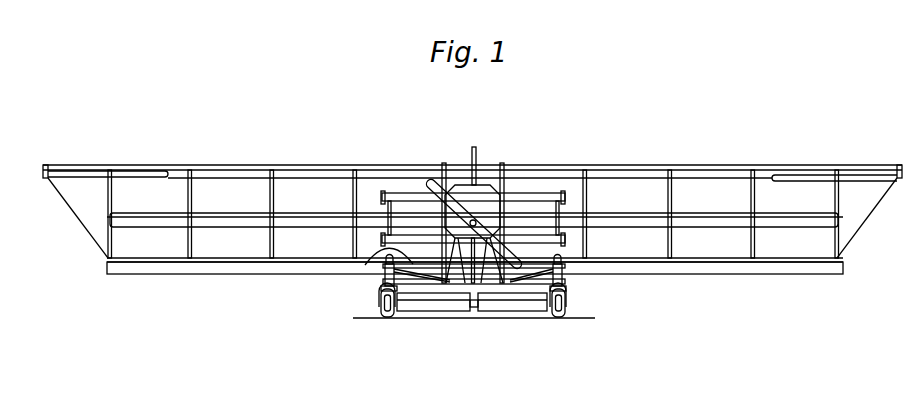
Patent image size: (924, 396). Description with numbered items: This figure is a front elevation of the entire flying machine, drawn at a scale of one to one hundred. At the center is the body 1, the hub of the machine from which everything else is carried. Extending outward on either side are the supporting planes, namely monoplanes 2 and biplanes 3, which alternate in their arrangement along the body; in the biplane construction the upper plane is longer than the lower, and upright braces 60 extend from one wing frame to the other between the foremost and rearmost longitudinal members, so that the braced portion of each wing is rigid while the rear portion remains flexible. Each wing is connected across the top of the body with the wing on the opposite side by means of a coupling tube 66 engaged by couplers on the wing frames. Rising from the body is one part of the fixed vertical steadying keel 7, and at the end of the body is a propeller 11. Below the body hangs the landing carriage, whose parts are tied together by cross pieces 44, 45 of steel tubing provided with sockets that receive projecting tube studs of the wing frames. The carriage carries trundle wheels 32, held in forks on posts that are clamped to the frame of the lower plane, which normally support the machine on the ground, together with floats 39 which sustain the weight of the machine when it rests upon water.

The body 1 is at (472, 211).
The supporting monoplanes 2 is at (740, 222).
The supporting biplanes 3 is at (648, 165).
The fixed vertical steadying keel 7 is at (475, 146).
The propeller 11 is at (441, 188).
The trundle wheel 32 is at (560, 318).
The float 39 is at (438, 305).
The cross piece 44 is at (368, 259).
The cross piece 45 is at (418, 285).
The upright brace 60 is at (272, 232).
The coupling tube 66 is at (493, 165).